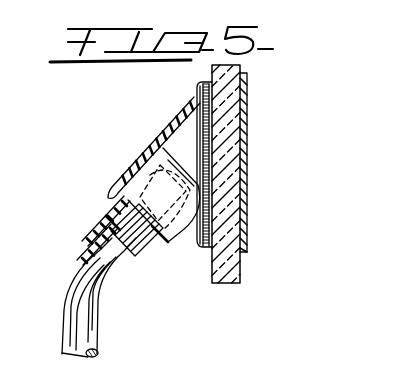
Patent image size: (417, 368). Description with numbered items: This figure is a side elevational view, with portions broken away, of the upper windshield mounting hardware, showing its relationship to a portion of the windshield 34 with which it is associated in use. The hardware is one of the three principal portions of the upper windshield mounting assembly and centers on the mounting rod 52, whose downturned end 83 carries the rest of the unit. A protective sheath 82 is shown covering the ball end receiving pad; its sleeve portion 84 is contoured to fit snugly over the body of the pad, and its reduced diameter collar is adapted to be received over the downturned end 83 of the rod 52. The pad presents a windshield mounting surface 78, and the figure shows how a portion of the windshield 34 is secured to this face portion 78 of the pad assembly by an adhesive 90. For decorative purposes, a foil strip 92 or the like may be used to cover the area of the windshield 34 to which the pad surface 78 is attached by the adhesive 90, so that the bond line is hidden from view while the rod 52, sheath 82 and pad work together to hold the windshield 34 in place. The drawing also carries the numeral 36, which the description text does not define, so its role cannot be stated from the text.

The windshield 34 is at (231, 283).
The nut 36 is at (141, 260).
The mounting rod 52 is at (75, 328).
The windshield mounting surface 78 is at (0, 168).
The protective sheath 82 is at (133, 153).
The downturned end 83 is at (98, 256).
The sleeve portion 84 is at (122, 170).
The adhesive 90 is at (205, 88).
The foil strip 92 is at (248, 152).